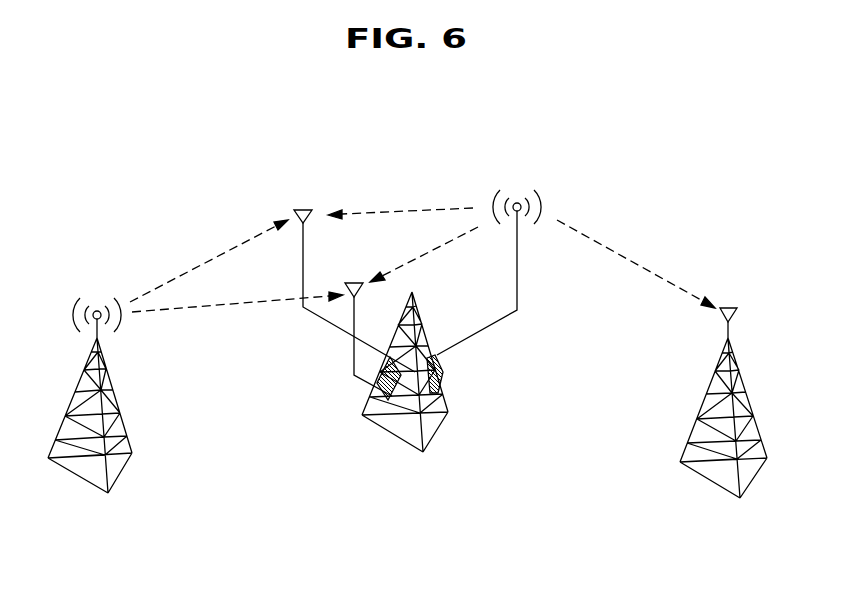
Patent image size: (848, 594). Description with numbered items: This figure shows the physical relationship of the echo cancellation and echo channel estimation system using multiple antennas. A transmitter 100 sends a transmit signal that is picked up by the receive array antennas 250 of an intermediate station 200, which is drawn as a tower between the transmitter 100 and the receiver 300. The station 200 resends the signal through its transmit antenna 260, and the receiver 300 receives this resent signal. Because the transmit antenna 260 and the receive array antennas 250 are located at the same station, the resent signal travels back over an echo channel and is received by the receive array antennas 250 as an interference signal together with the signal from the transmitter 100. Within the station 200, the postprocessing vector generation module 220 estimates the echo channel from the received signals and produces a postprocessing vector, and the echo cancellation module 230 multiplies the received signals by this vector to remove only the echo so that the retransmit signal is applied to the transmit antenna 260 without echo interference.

The transmitter 100 is at (90, 467).
The relay station 200 is at (402, 430).
The postprocessing vector generation module 220 is at (370, 383).
The echo cancellation module 230 is at (440, 382).
The receive array antennas 250 is at (354, 281).
The transmit antenna 260 is at (517, 200).
The receiver 300 is at (722, 472).